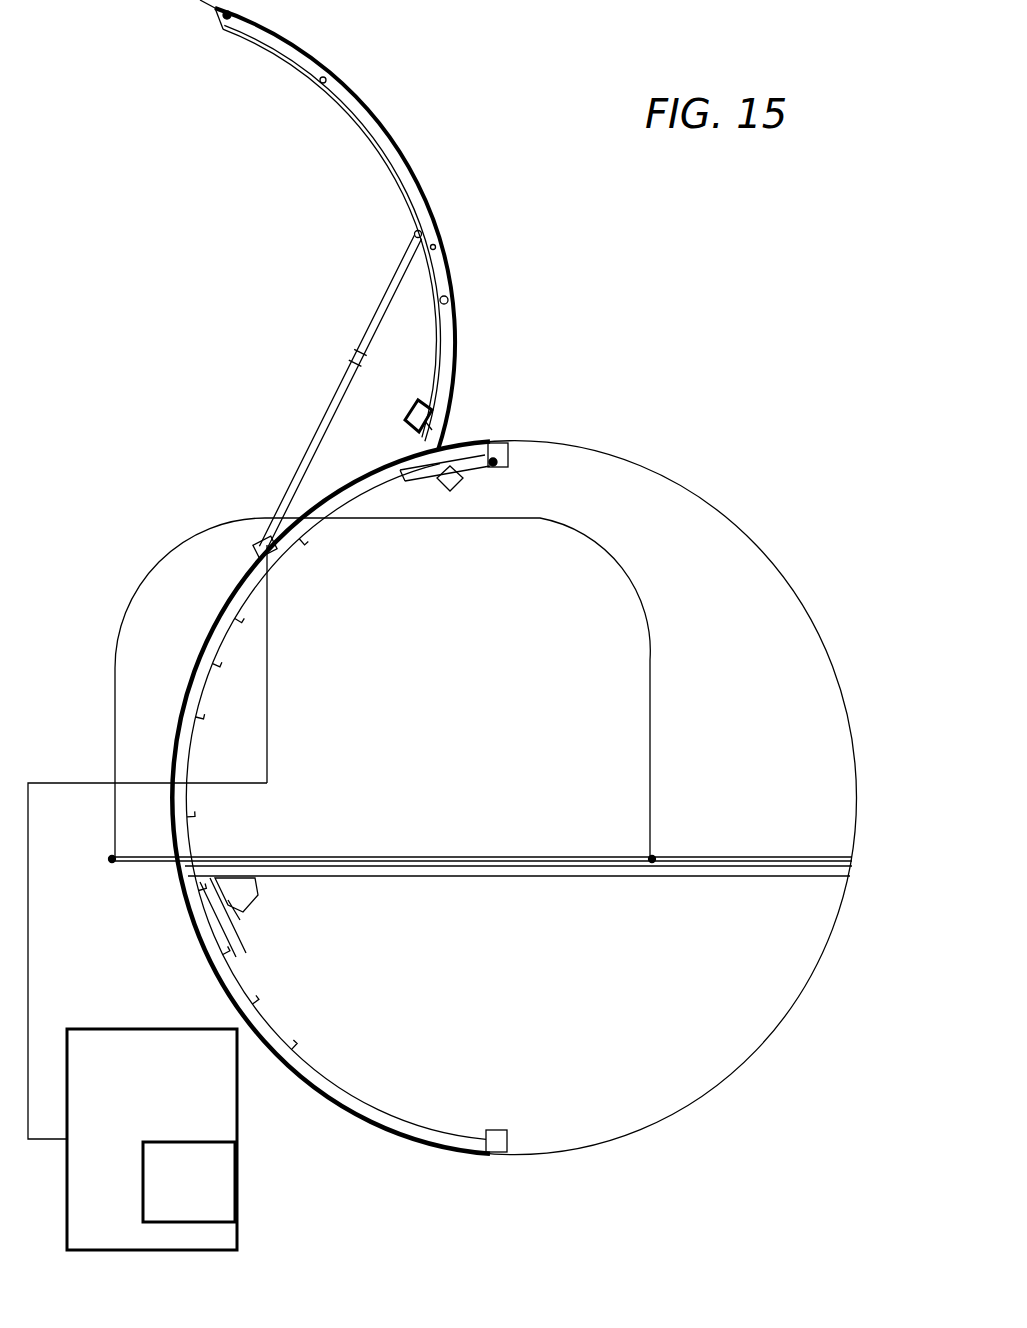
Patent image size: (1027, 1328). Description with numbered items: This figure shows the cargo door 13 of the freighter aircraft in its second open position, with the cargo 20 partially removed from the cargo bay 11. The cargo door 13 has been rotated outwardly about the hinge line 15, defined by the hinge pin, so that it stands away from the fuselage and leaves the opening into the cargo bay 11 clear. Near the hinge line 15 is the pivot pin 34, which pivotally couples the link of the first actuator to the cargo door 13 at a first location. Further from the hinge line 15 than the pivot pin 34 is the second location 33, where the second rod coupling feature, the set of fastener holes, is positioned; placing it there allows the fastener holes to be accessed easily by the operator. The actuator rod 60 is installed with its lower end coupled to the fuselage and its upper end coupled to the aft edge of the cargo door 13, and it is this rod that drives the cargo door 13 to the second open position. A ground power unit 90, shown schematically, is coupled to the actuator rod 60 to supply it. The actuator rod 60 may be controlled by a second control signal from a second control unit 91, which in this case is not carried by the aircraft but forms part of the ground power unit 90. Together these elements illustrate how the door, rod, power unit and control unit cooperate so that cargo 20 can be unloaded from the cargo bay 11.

The cargo bay 11 is at (728, 673).
The cargo door 13 is at (357, 107).
The hinge line 15 is at (456, 436).
The cargo 20 is at (540, 540).
The second location 33 is at (414, 230).
The pivot pin 34 is at (412, 423).
The actuator rod 60 is at (310, 432).
The ground power unit 90 is at (164, 1112).
The second control unit 91 is at (201, 1195).